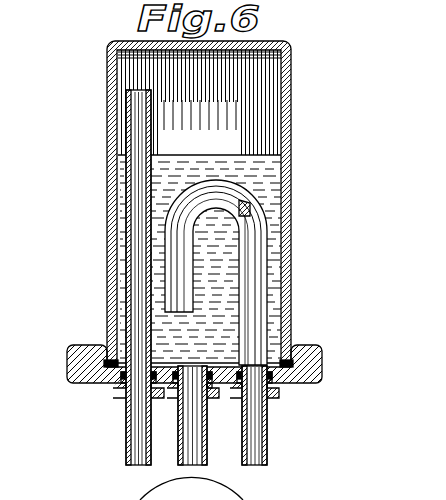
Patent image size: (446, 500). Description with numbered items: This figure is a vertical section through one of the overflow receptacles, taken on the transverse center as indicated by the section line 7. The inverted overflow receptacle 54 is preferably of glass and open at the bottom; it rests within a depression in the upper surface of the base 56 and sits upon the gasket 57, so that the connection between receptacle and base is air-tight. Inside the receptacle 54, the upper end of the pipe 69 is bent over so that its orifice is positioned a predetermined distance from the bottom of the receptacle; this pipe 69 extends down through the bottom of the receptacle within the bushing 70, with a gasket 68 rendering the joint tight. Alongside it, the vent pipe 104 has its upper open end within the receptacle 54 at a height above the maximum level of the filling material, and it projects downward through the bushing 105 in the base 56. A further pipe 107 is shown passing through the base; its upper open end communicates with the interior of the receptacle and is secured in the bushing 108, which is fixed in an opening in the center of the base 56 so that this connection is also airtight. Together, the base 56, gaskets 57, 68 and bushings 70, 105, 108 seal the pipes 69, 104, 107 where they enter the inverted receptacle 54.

The section line 7 is at (338, 65).
The inverted overflow receptacle 54 is at (110, 94).
The base 56 is at (88, 352).
The gasket 57 is at (107, 383).
The pipe 69 is at (268, 251).
The vent pipe 104 is at (140, 211).
The outlet tube 107 is at (200, 447).
The bushing 105 is at (118, 403).
The bushing 108 is at (176, 401).
The gasket 68 is at (227, 398).
The bushing 70 is at (280, 398).